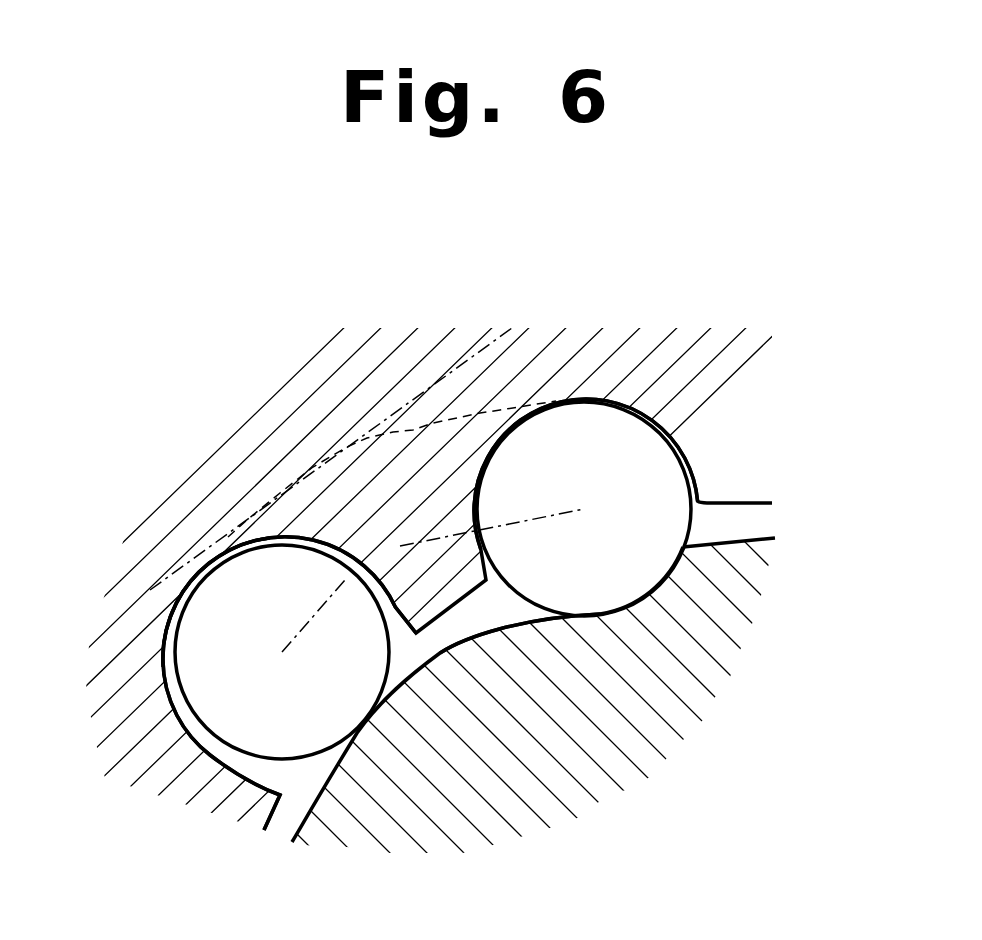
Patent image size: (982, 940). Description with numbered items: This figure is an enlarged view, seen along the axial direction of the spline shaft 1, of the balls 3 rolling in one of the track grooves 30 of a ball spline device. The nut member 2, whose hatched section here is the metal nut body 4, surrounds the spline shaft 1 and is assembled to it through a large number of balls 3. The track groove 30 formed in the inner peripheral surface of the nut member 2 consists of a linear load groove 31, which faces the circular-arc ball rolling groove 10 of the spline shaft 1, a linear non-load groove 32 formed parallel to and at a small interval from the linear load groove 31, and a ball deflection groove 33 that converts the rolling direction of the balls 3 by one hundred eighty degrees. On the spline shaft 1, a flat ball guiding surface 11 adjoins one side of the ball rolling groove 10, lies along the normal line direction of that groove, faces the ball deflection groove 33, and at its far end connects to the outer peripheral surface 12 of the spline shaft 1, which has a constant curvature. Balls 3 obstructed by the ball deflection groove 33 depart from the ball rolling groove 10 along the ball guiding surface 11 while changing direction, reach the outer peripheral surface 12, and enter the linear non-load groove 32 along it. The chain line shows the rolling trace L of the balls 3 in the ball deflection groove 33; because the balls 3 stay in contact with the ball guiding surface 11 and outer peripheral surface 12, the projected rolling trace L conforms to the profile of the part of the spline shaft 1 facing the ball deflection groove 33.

The spline shaft 1 is at (736, 750).
The nut member 2 is at (429, 544).
The nut body 4 is at (767, 353).
The balls 3 is at (202, 665).
The ball rolling groove 10 is at (650, 588).
The ball guiding surface 11 is at (533, 625).
The outer peripheral surface 12 is at (323, 778).
The track groove 30 is at (262, 473).
The linear load groove 31 is at (540, 405).
The linear non-load groove 32 is at (170, 627).
The ball deflection groove 33 is at (448, 424).
The rolling trace L is at (387, 531).